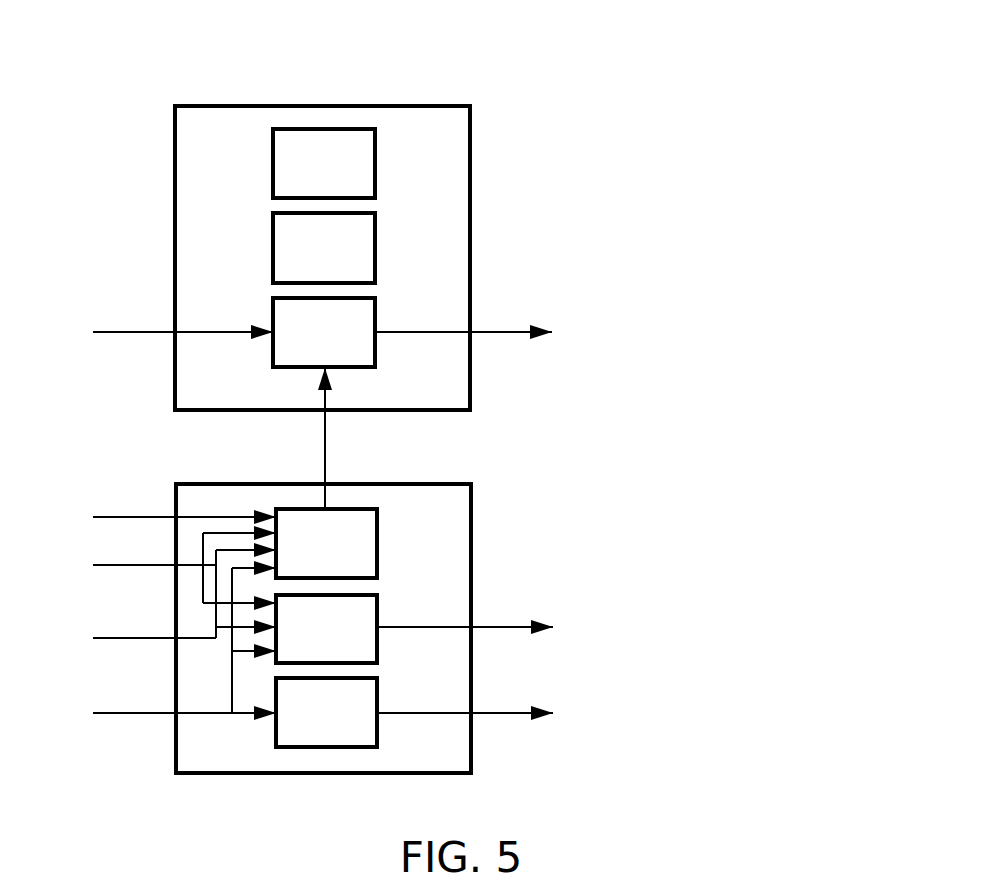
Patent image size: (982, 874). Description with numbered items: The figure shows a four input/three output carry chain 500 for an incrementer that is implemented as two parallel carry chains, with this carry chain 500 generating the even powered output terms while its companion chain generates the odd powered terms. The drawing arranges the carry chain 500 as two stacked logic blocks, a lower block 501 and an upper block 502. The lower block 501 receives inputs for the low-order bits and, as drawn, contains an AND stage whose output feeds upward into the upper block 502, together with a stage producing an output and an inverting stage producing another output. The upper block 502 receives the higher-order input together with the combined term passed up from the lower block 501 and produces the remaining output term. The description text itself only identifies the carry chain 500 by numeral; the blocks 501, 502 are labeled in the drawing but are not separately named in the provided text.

The carry chain 500 is at (657, 30).
The low-order bit logic block 501 is at (448, 542).
The high-order bit logic block 502 is at (442, 175).